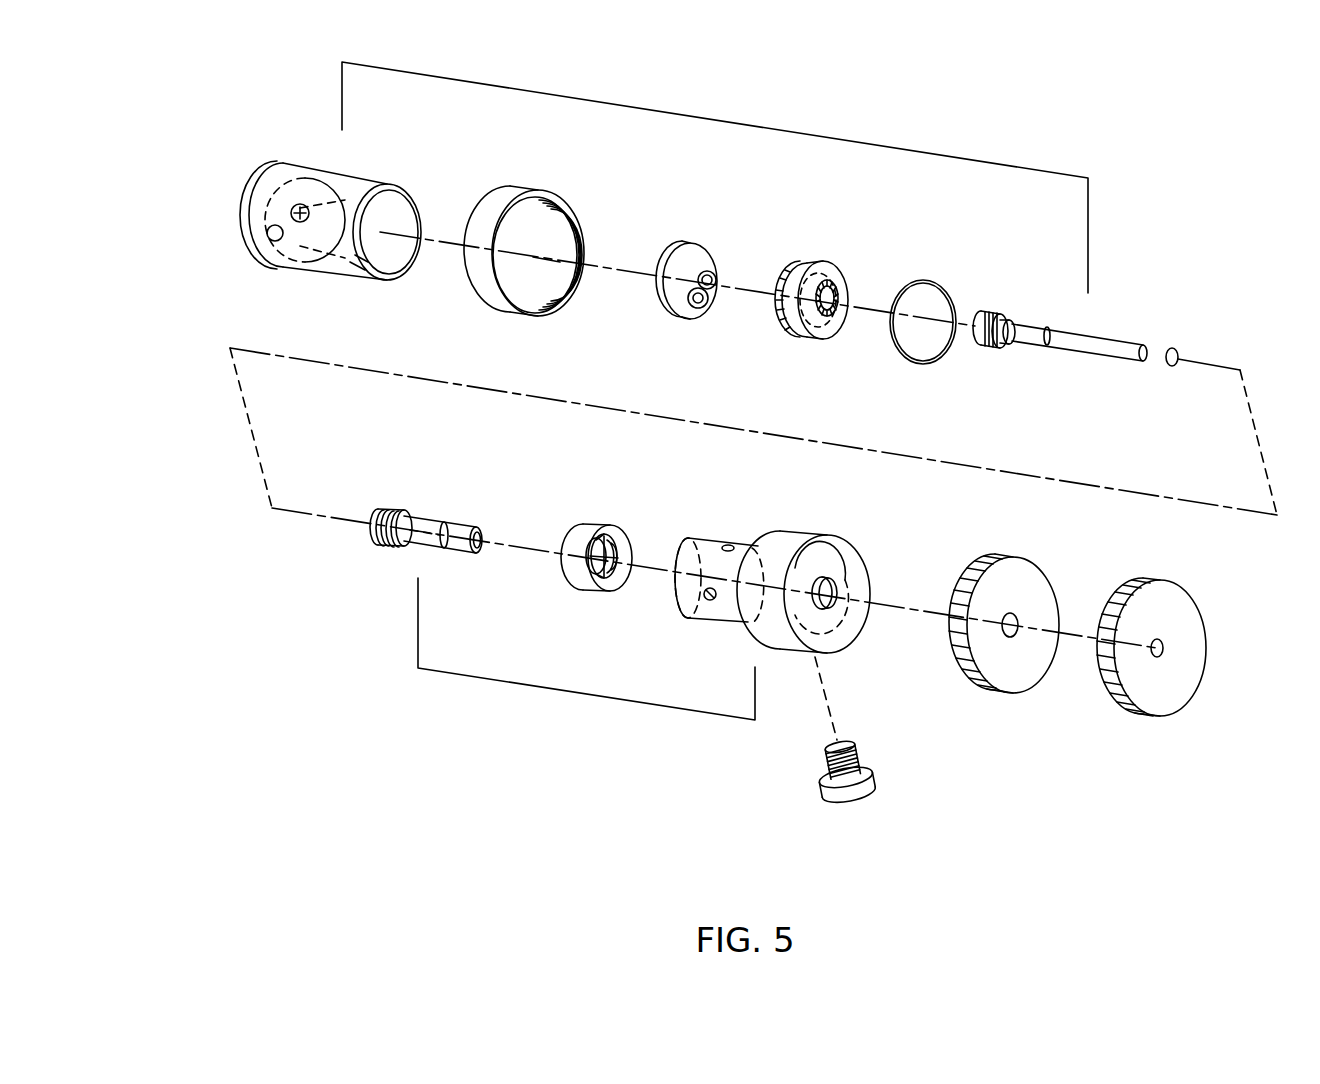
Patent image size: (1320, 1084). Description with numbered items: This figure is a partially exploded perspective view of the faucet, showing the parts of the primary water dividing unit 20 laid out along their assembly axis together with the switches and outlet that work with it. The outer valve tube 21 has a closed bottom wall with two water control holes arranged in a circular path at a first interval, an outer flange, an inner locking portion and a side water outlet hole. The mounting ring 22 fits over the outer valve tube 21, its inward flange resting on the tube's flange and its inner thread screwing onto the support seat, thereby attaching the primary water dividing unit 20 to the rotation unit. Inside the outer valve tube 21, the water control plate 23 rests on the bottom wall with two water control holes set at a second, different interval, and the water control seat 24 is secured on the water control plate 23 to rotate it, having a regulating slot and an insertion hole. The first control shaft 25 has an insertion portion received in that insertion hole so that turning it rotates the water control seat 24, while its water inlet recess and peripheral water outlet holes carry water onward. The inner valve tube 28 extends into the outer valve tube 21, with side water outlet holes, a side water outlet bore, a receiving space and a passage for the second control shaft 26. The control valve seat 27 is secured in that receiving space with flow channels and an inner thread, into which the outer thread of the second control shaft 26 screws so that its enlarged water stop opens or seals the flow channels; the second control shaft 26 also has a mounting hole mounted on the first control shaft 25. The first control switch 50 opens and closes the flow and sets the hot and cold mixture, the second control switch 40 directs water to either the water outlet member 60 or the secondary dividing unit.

The primary water dividing unit 20 is at (738, 124).
The outer valve tube 21 is at (288, 162).
The mounting ring 22 is at (548, 236).
The water control plate 23 is at (695, 246).
The water control seat 24 is at (840, 296).
The first control shaft 25 is at (982, 312).
The second control shaft 26 is at (428, 514).
The control valve seat 27 is at (614, 526).
The inner valve tube 28 is at (705, 556).
The second control switch 40 is at (1021, 705).
The first control switch 50 is at (1182, 716).
The water outlet member 60 is at (889, 791).